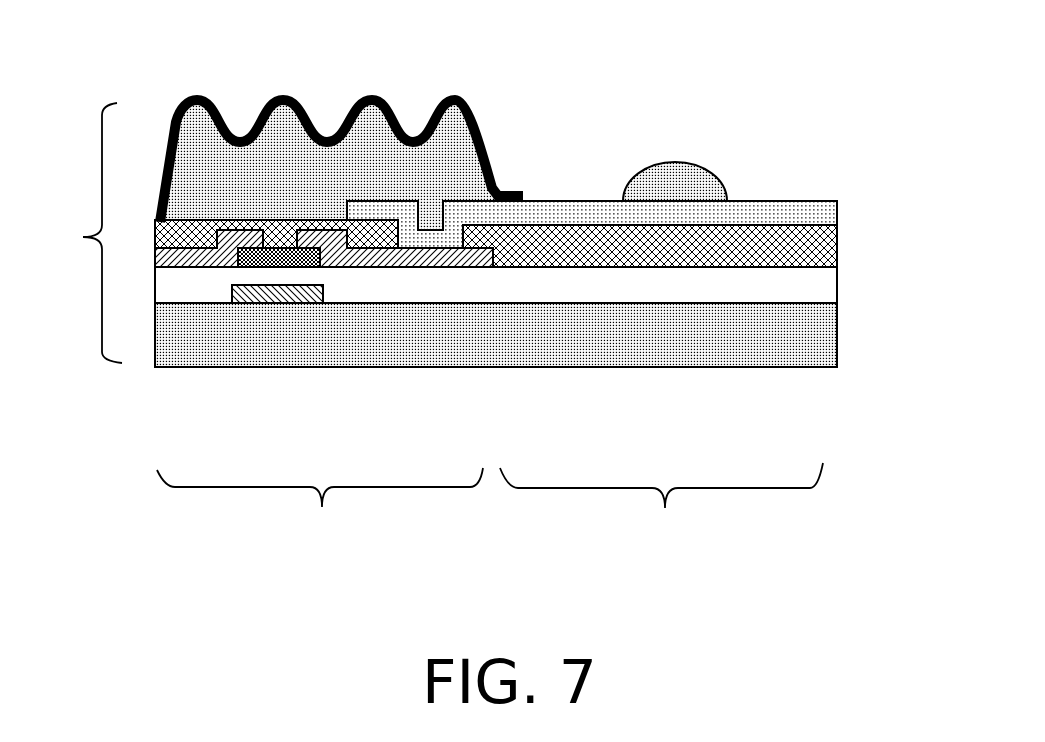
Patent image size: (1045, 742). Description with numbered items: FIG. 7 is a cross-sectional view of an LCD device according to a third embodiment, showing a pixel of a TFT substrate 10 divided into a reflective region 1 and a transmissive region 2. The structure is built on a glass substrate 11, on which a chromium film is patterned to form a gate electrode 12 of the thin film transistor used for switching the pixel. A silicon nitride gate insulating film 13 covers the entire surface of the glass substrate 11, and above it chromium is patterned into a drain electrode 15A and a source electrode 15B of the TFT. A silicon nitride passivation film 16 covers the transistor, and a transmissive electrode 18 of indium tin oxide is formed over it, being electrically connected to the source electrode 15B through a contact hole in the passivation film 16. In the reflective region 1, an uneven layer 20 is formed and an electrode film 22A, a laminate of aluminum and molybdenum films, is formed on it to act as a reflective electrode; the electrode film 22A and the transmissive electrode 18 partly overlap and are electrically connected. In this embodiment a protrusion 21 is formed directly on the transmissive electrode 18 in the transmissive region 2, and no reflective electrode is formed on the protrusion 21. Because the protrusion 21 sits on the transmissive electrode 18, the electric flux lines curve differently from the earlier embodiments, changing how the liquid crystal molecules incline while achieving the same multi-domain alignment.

The reflective region 1 is at (320, 516).
The transmissive region 2 is at (661, 519).
The TFT substrate 10 is at (75, 233).
The glass substrate 11 is at (827, 352).
The gate electrode 12 is at (285, 295).
The gate insulating film 13 is at (820, 292).
The drain electrode 15A is at (178, 258).
The source electrode 15B is at (443, 255).
The passivation film 16 is at (827, 242).
The transmissive electrode 18 is at (820, 217).
The uneven layer 20 is at (463, 175).
The protrusion 21 is at (680, 188).
The electrode film 22A is at (305, 102).